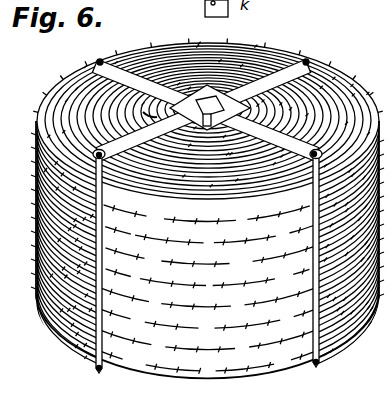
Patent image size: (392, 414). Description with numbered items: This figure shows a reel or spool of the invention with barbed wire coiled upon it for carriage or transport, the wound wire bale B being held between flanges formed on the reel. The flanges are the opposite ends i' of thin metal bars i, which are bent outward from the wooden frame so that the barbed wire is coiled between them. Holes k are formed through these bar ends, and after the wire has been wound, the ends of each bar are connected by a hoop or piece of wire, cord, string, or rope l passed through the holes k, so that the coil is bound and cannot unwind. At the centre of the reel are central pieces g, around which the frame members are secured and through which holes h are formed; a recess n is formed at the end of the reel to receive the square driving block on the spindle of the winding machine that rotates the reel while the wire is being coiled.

The bale of wire B is at (207, 209).
The hoop or piece of wire, cord, string, or rope l is at (100, 62).
The hole k is at (110, 58).
The end of bar i' is at (207, 91).
The recess n is at (210, 107).
The hole h is at (209, 133).
The central piece g is at (141, 111).